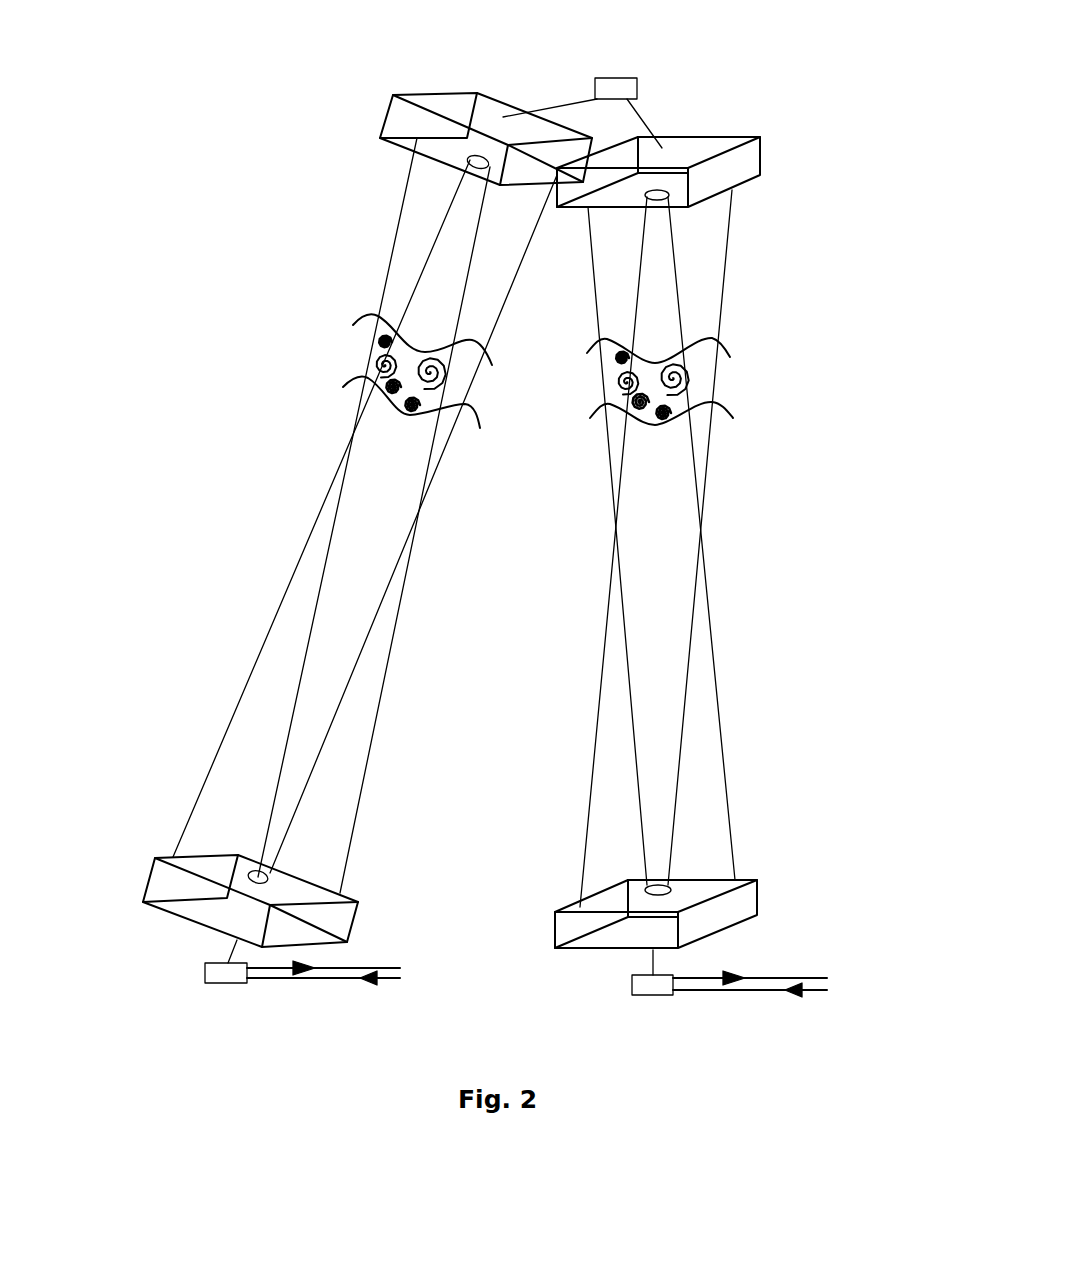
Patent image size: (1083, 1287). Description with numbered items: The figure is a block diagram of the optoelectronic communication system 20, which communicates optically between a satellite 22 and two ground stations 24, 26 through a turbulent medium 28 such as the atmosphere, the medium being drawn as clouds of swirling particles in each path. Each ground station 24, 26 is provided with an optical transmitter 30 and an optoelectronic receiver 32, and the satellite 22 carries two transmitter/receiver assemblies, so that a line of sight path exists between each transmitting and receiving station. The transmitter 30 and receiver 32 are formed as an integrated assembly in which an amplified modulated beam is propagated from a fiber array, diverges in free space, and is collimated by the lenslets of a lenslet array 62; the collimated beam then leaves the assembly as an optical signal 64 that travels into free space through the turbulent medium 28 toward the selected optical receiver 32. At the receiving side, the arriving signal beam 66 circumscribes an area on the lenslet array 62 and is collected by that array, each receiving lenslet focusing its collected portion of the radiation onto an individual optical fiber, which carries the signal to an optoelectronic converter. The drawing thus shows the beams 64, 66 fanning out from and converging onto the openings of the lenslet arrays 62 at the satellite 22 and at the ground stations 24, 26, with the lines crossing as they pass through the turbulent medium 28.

The optoelectronic communication system 20 is at (935, 218).
The satellite 22 is at (637, 85).
The ground station 24 is at (268, 1058).
The ground station 26 is at (669, 1058).
The turbulent medium 28 is at (372, 345).
The optical transmitter 30 is at (486, 515).
The optoelectronic receiver 32 is at (486, 515).
The lenslet array 62 is at (740, 880).
The optical signal 64 is at (668, 298).
The signal beam 66 is at (365, 775).